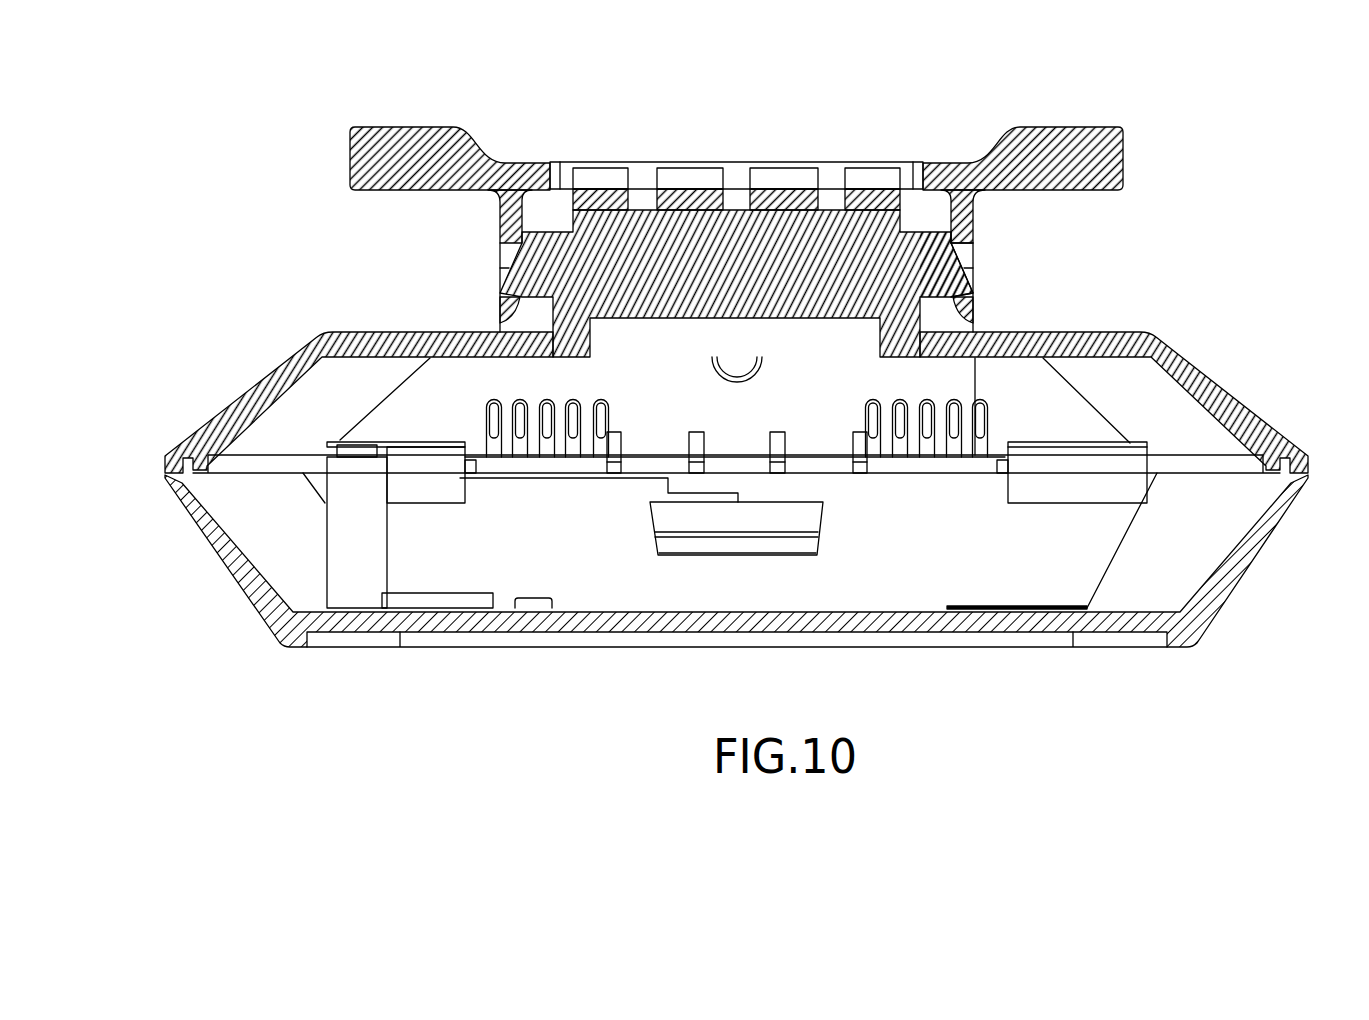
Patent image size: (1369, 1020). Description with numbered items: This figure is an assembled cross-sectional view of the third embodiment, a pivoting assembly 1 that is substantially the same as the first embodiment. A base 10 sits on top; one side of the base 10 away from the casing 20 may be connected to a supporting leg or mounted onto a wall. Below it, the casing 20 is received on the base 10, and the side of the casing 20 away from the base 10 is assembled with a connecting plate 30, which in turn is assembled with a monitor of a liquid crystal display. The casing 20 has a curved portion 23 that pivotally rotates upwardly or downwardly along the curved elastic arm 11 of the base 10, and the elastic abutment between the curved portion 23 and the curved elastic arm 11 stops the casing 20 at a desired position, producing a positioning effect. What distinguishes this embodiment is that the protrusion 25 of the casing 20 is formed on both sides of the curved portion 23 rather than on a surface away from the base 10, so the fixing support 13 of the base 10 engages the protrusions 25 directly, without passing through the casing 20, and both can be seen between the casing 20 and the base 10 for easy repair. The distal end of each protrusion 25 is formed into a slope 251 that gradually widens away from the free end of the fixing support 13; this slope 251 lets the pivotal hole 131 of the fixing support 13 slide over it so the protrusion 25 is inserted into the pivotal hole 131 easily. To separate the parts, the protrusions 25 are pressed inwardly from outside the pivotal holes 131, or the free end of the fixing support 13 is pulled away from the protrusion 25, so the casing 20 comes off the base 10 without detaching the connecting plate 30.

The pivoting assembly 1 is at (214, 201).
The base 10 is at (367, 152).
The curved elastic arm 11 is at (614, 197).
The fixing support 13 is at (973, 218).
The pivotal hole 131 is at (975, 257).
The casing 20 is at (360, 343).
The curved portion 23 is at (735, 222).
The protrusion 25 is at (938, 253).
The slope 251 is at (975, 270).
The connecting plate 30 is at (227, 545).